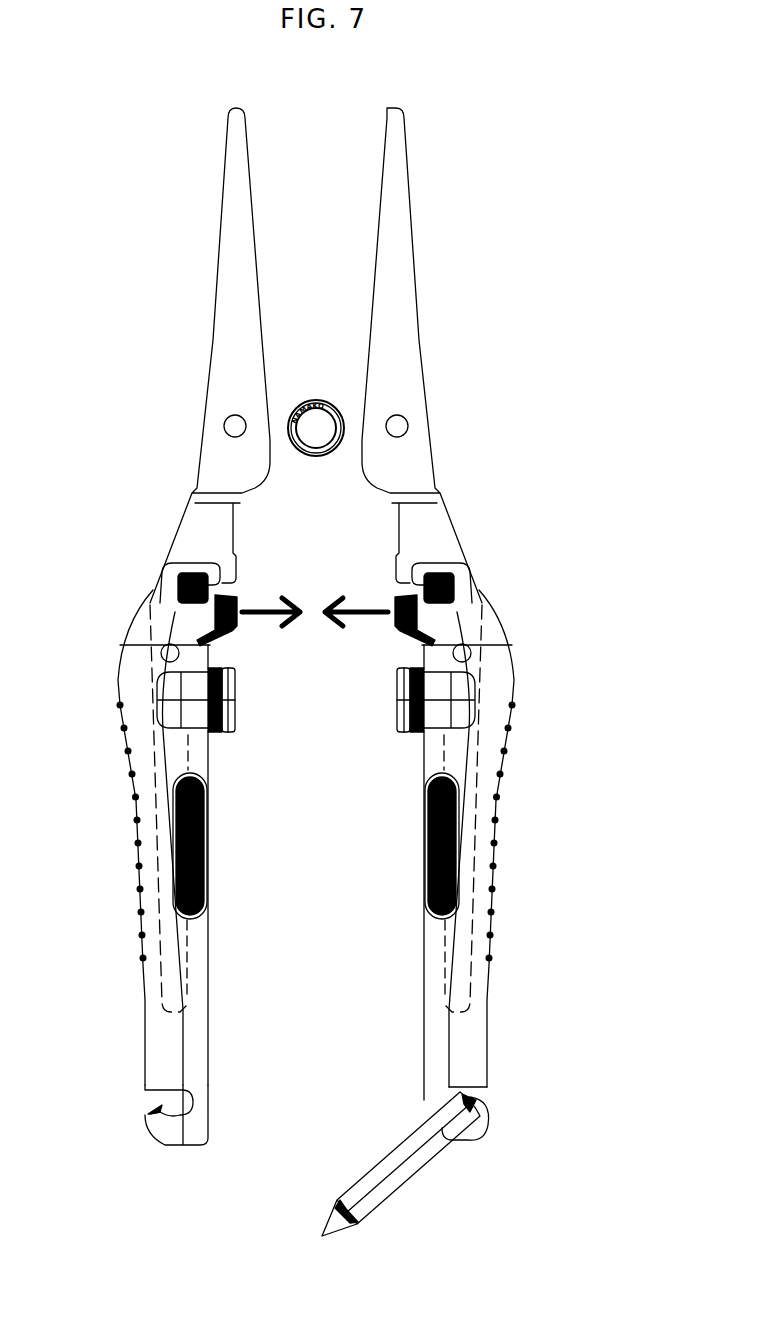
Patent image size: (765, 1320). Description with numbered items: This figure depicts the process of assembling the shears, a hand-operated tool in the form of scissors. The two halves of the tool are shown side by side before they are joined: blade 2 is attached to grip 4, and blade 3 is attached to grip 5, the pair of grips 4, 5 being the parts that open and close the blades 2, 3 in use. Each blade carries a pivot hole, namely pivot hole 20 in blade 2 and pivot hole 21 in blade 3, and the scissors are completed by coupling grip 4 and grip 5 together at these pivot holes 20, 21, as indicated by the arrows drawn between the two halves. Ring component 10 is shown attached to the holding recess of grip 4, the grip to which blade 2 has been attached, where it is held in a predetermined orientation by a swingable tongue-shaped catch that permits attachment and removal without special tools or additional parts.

The blade 2 is at (400, 270).
The blade 3 is at (230, 262).
The grip 4 is at (485, 885).
The grip 5 is at (147, 885).
The ring component 10 is at (398, 1133).
The pivot hole 20 is at (406, 423).
The pivot hole 21 is at (226, 423).